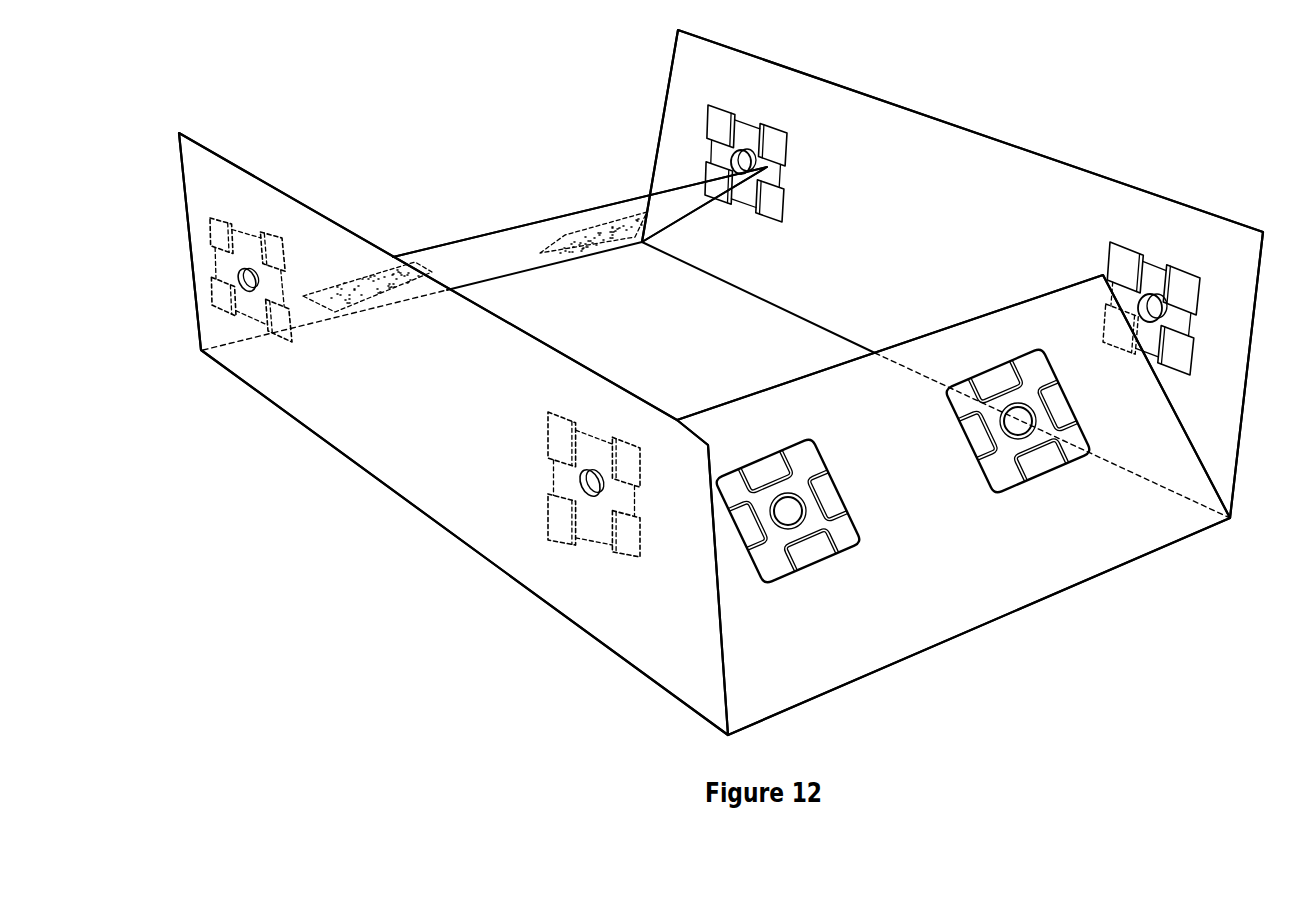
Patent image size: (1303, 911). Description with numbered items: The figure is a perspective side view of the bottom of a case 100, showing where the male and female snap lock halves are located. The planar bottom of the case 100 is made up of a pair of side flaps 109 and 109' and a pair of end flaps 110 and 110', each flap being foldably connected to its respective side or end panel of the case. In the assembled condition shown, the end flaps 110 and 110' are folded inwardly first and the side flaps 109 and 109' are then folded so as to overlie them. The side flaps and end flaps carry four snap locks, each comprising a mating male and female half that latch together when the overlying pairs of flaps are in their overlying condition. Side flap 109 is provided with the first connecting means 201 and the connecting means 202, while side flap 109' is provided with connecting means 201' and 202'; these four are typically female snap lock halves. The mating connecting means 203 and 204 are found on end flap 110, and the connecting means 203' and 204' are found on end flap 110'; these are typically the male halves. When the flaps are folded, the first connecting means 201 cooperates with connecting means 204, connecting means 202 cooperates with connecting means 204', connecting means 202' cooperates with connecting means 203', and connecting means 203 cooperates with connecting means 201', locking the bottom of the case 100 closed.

The case 100 is at (385, 572).
The side flap 109 is at (453, 434).
The end flap 110 is at (953, 505).
The side flap 109' is at (952, 274).
The end flap 110' is at (485, 209).
The first connecting means 201 is at (565, 550).
The connecting means 202 is at (241, 334).
The connecting means 201' is at (1187, 273).
The connecting means 202' is at (786, 125).
The mating connecting means 203 is at (1052, 489).
The mating connecting means 204 is at (805, 594).
The connecting means 203' is at (593, 153).
The connecting means 204' is at (367, 210).